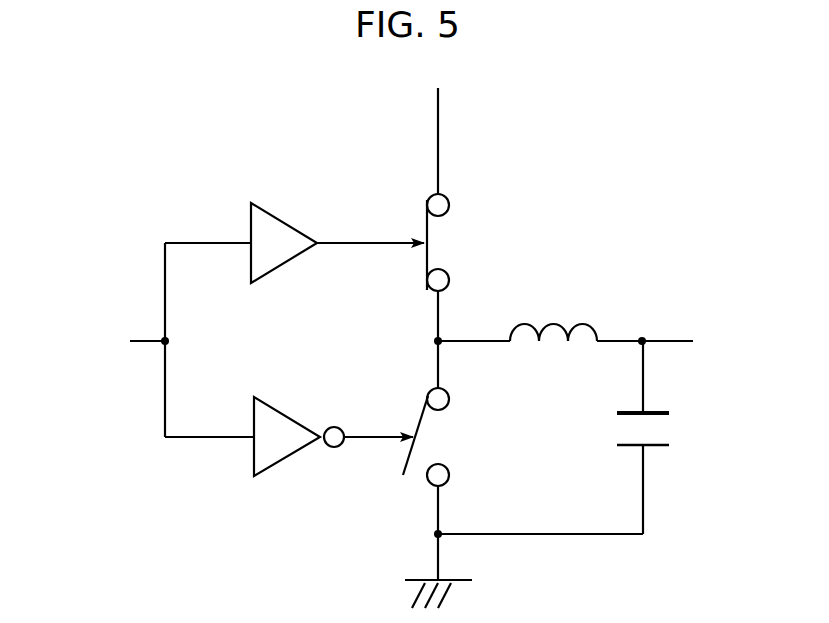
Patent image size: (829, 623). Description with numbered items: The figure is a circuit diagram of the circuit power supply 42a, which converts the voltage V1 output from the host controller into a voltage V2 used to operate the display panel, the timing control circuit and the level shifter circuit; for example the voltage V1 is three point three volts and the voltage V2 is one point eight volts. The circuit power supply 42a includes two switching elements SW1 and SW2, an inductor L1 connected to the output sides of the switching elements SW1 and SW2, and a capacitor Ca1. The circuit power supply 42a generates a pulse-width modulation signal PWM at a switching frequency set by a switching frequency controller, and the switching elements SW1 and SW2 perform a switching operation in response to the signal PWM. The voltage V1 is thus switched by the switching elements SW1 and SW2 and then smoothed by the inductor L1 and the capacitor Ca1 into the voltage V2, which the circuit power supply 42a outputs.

The circuit power supply 42a is at (147, 119).
The switching element SW1 is at (418, 223).
The switching element SW2 is at (410, 418).
The inductor L1 is at (597, 293).
The capacitor Ca1 is at (674, 422).
The voltage V1 is at (436, 123).
The voltage V2 is at (717, 343).
The pulse-width modulation signal PWM is at (118, 343).